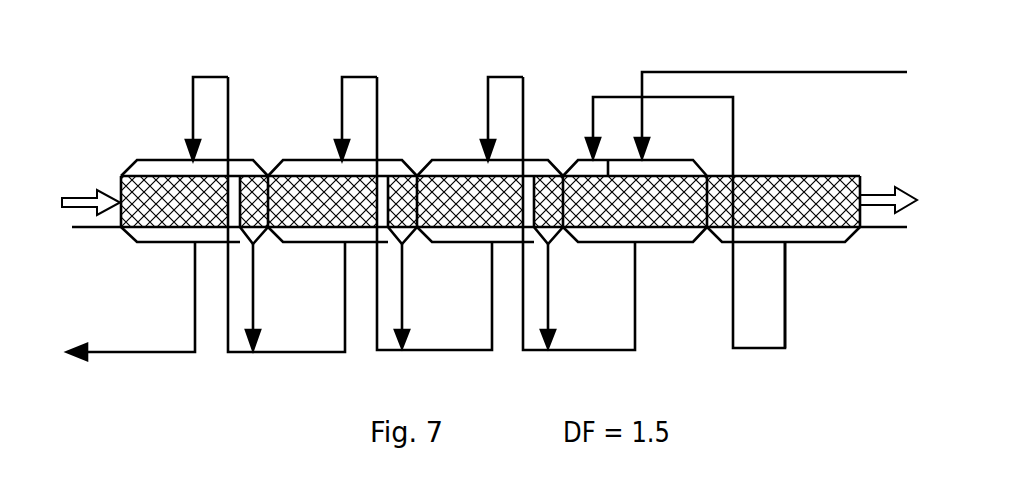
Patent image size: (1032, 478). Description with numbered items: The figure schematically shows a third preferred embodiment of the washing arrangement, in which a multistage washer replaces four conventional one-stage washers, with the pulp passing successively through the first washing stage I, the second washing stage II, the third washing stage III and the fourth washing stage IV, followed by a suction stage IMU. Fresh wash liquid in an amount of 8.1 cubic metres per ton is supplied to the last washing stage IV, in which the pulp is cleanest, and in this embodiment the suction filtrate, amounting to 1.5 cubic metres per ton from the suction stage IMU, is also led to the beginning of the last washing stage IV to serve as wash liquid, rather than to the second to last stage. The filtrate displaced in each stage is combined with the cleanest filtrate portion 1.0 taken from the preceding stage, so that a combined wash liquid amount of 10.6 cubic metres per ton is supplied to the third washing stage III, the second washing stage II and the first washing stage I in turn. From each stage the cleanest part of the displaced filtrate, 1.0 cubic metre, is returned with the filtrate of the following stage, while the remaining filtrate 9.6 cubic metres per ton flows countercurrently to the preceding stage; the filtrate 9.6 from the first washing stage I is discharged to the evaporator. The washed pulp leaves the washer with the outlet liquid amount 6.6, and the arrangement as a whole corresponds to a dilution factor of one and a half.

The first washing stage I is at (194, 226).
The second washing stage II is at (342, 226).
The third washing stage III is at (490, 226).
The fourth washing stage IV is at (635, 226).
The suction stage IMU is at (783, 209).
The fresh wash liquid amount 8.1 is at (478, 130).
The combined wash liquid amount 10.6 is at (358, 105).
The remaining filtrate amount 9.6 is at (426, 218).
The cleanest filtrate portion 1.0 is at (410, 297).
The suction stage filtrate amount 1.5 is at (799, 295).
The outlet liquid amount 6.6 is at (889, 173).